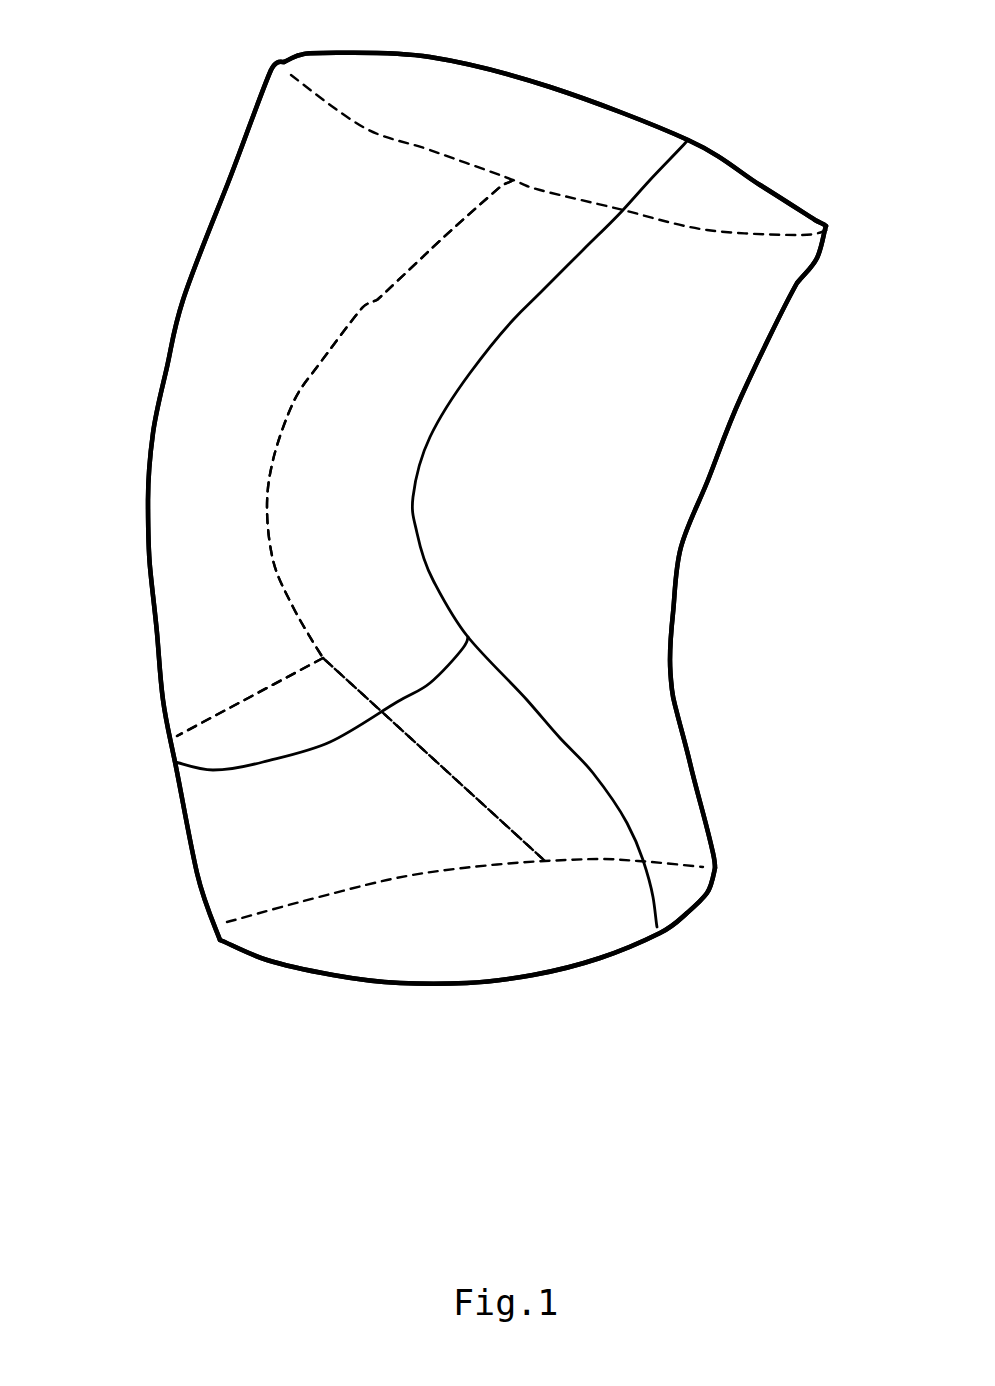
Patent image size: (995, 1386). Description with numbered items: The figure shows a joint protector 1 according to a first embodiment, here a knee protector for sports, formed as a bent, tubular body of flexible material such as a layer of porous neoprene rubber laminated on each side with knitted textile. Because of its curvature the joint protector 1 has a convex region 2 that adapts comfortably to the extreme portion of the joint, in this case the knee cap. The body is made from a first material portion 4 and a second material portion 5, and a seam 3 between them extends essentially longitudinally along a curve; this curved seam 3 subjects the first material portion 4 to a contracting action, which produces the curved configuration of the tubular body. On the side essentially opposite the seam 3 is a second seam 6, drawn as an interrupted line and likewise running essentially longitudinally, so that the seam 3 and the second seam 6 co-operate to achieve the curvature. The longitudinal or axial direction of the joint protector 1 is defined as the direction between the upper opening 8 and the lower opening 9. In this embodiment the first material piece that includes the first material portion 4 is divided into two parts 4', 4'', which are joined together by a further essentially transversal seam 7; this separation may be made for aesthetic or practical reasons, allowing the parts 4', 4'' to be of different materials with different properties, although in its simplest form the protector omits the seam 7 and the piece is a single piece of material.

The joint protector 1 is at (802, 130).
The convex region 2 is at (133, 563).
The seam 3 is at (420, 537).
The first material portion 4 is at (361, 520).
The first part of the first material piece 4' is at (250, 670).
The second part of the first material piece 4'' is at (434, 759).
The second material portion 5 is at (585, 565).
The second seam 6 is at (293, 403).
The transversal seam 7 is at (273, 763).
The upper opening 8 is at (597, 80).
The lower opening 9 is at (560, 987).